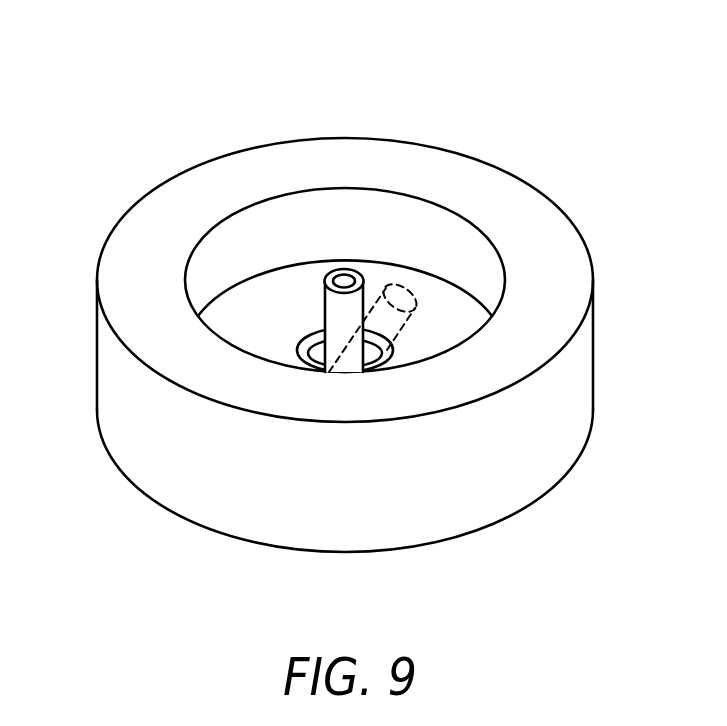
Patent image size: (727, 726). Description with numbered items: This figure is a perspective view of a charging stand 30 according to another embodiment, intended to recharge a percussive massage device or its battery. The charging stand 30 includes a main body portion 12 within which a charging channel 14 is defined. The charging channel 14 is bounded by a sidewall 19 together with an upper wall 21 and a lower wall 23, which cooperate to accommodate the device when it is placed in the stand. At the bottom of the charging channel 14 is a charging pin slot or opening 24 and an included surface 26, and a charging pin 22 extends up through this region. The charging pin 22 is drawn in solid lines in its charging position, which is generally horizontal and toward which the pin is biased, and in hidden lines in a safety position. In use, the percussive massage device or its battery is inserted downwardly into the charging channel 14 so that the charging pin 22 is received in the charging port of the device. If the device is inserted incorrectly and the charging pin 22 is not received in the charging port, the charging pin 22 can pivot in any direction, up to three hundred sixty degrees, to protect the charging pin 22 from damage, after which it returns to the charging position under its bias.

The charging stand 30 is at (347, 282).
The main body portion 12 is at (577, 256).
The charging channel 14 is at (248, 228).
The sidewall 19 is at (354, 200).
The upper wall 21 is at (200, 262).
The charging pin 22 is at (337, 302).
The lower wall 23 is at (468, 312).
The charging pin slot 24 is at (316, 364).
The included surface 26 is at (305, 352).